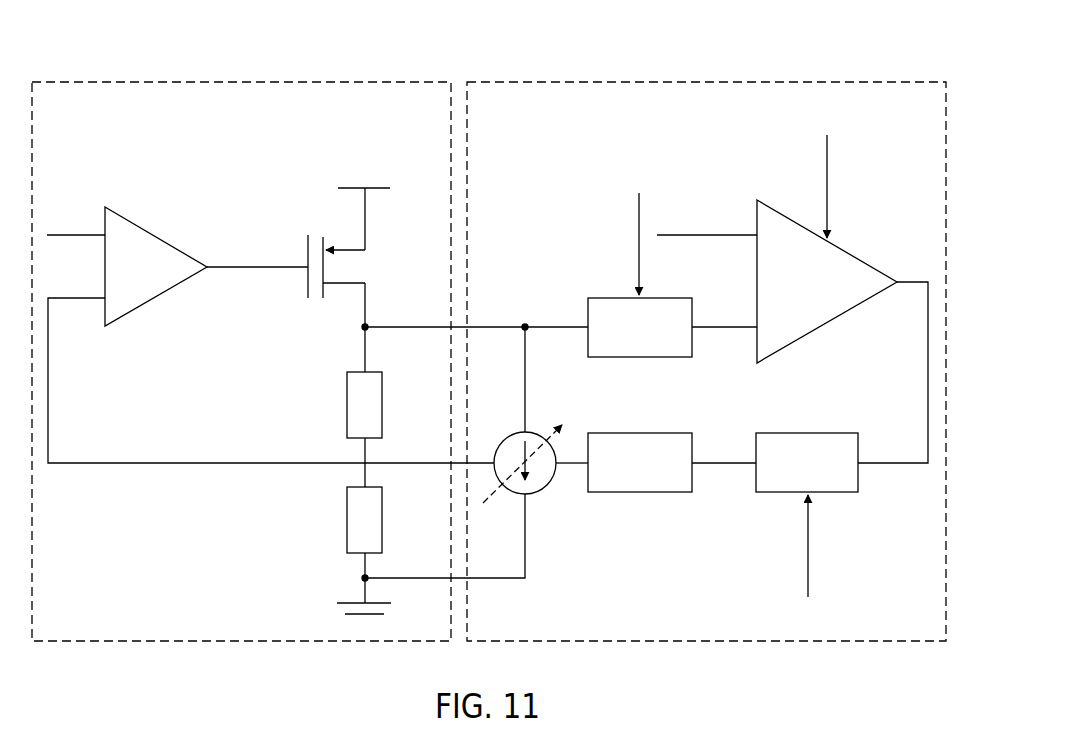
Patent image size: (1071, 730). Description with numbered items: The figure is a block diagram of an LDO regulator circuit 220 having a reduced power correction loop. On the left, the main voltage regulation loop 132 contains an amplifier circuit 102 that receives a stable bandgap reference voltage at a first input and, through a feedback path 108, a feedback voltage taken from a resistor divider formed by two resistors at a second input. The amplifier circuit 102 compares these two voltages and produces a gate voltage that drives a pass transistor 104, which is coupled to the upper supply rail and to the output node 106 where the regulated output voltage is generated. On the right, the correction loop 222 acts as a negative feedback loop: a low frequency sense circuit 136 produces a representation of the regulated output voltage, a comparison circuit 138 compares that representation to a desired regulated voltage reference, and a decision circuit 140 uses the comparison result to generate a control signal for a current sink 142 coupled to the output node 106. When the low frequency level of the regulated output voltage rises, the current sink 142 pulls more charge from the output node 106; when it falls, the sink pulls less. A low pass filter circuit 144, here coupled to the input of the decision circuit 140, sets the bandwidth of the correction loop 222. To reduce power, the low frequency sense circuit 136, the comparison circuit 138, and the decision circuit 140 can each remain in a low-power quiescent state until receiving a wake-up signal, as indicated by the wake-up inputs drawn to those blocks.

The LDO regulator circuit 220 is at (102, 44).
The main voltage regulation loop 132 is at (240, 82).
The correction loop 222 is at (705, 82).
The amplifier circuit 102 is at (158, 232).
The pass transistor 104 is at (308, 285).
The output node 106 is at (367, 353).
The feedback path 108 is at (195, 463).
The low frequency sense circuit 136 is at (660, 298).
The comparison circuit 138 is at (845, 250).
The decision circuit 140 is at (808, 433).
The current sink 142 is at (545, 490).
The low pass filter circuit 144 is at (640, 433).